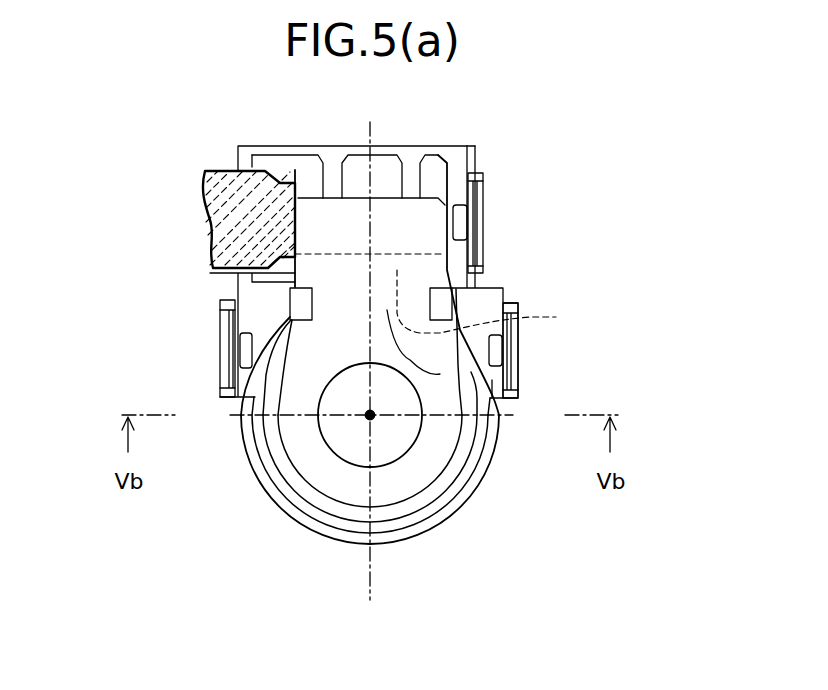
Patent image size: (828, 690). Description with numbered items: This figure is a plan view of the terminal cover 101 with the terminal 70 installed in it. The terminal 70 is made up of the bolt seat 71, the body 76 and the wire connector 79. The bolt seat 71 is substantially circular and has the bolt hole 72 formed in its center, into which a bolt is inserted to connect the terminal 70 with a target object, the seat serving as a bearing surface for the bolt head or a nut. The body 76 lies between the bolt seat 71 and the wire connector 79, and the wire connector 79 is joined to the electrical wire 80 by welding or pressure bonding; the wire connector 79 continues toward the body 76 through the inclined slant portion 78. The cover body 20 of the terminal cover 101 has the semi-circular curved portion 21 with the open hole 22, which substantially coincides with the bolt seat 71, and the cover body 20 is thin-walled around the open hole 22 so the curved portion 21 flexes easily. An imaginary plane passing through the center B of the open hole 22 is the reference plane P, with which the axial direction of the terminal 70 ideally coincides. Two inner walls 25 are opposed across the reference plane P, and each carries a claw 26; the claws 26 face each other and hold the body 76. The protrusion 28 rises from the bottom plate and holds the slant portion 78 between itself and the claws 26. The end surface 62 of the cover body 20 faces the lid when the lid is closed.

The cover body 20 is at (443, 548).
The curved portion 21 is at (472, 490).
The open hole 22 is at (477, 455).
The inner wall 25 is at (305, 284).
The claw 26 is at (303, 304).
The protrusion 28 is at (412, 188).
The end surface 62 is at (265, 325).
The terminal 70 is at (392, 496).
The bolt seat 71 is at (305, 430).
The bolt hole 72 is at (340, 438).
The body 76 is at (440, 374).
The slant portion 78 is at (493, 302).
The wire connector 79 is at (357, 185).
The electrical wire 80 is at (227, 215).
The terminal cover 101 is at (621, 238).
The center of the open hole B is at (370, 417).
The reference plane P is at (370, 582).